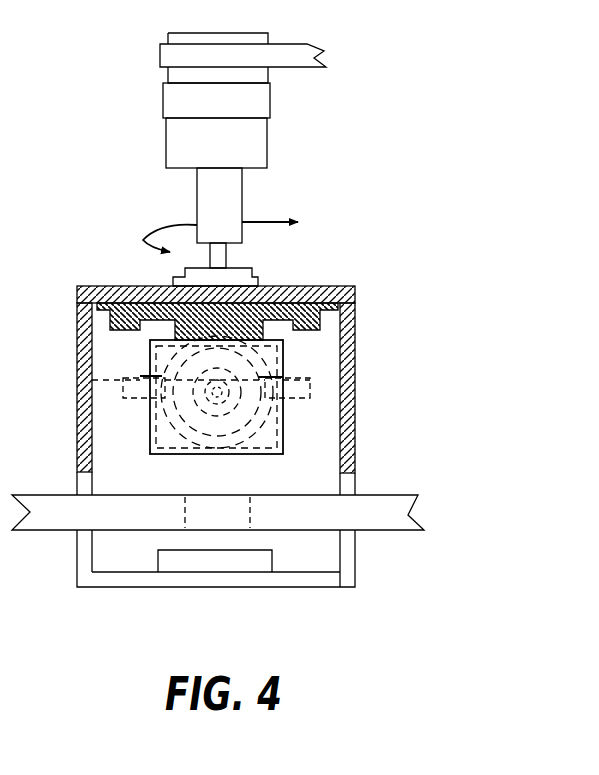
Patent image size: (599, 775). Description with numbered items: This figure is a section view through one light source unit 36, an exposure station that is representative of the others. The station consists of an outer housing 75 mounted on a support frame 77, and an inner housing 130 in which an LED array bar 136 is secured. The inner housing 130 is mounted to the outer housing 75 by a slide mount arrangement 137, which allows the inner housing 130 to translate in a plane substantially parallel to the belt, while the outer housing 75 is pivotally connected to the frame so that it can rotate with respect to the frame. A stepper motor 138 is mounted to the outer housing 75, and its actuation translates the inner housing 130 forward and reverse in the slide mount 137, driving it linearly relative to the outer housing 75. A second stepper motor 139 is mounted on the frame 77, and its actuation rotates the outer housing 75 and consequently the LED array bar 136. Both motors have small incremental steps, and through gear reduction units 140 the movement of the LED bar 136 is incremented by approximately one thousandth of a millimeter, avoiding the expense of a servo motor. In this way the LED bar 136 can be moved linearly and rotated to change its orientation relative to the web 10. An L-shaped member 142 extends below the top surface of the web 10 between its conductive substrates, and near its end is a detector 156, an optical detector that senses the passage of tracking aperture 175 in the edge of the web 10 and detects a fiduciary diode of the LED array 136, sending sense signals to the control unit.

The support frame 77 is at (315, 47).
The stepper motor 139 is at (270, 100).
The gear reduction unit 140 is at (242, 203).
The light source unit 36 is at (320, 225).
The slide mount arrangement 137 is at (357, 290).
The outer housing 75 is at (330, 374).
The inner housing 130 is at (283, 438).
The stepper motor 138 is at (150, 377).
The aperture 175 is at (205, 510).
The LED array bar 136 is at (245, 457).
The detector 156 is at (170, 562).
The L-shaped member 142 is at (320, 565).
The web 10 is at (364, 550).